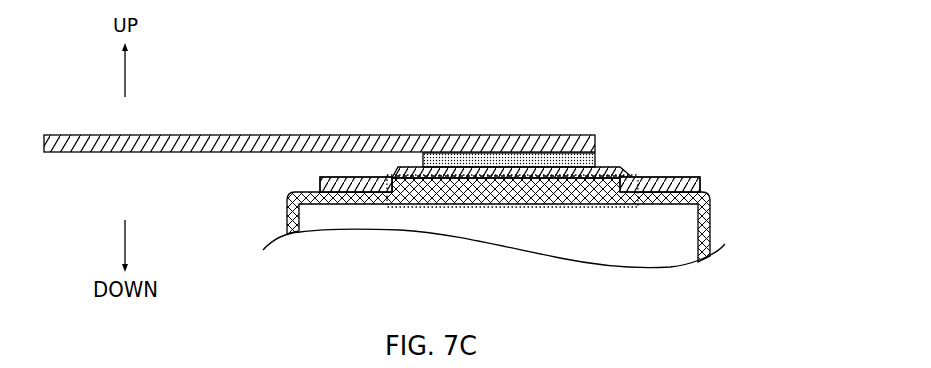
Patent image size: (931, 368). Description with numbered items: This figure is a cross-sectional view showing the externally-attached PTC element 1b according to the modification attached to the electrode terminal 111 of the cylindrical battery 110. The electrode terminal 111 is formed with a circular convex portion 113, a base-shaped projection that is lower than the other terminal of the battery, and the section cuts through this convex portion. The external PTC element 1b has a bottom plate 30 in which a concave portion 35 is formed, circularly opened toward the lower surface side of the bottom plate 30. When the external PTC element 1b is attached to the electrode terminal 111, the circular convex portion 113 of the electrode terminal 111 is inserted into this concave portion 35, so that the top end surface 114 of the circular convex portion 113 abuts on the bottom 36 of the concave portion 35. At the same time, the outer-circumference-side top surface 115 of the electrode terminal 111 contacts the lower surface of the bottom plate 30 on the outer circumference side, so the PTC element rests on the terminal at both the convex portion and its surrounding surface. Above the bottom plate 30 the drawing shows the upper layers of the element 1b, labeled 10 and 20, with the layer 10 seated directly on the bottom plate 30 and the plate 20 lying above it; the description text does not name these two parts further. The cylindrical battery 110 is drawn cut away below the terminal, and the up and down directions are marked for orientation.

The externally-attached PTC element 1b is at (378, 117).
The electrode sheet 10 is at (596, 155).
The upper plate 20 is at (192, 148).
The bottom plate 30 is at (318, 183).
The concave portion 35 is at (447, 155).
The bottom of the concave portion 36 is at (472, 193).
The cylindrical battery 110 is at (725, 236).
The electrode terminal 111 is at (514, 130).
The circular convex portion 113 is at (423, 207).
The top end surface 114 is at (562, 172).
The outer-circumference-side top surface 115 is at (343, 184).